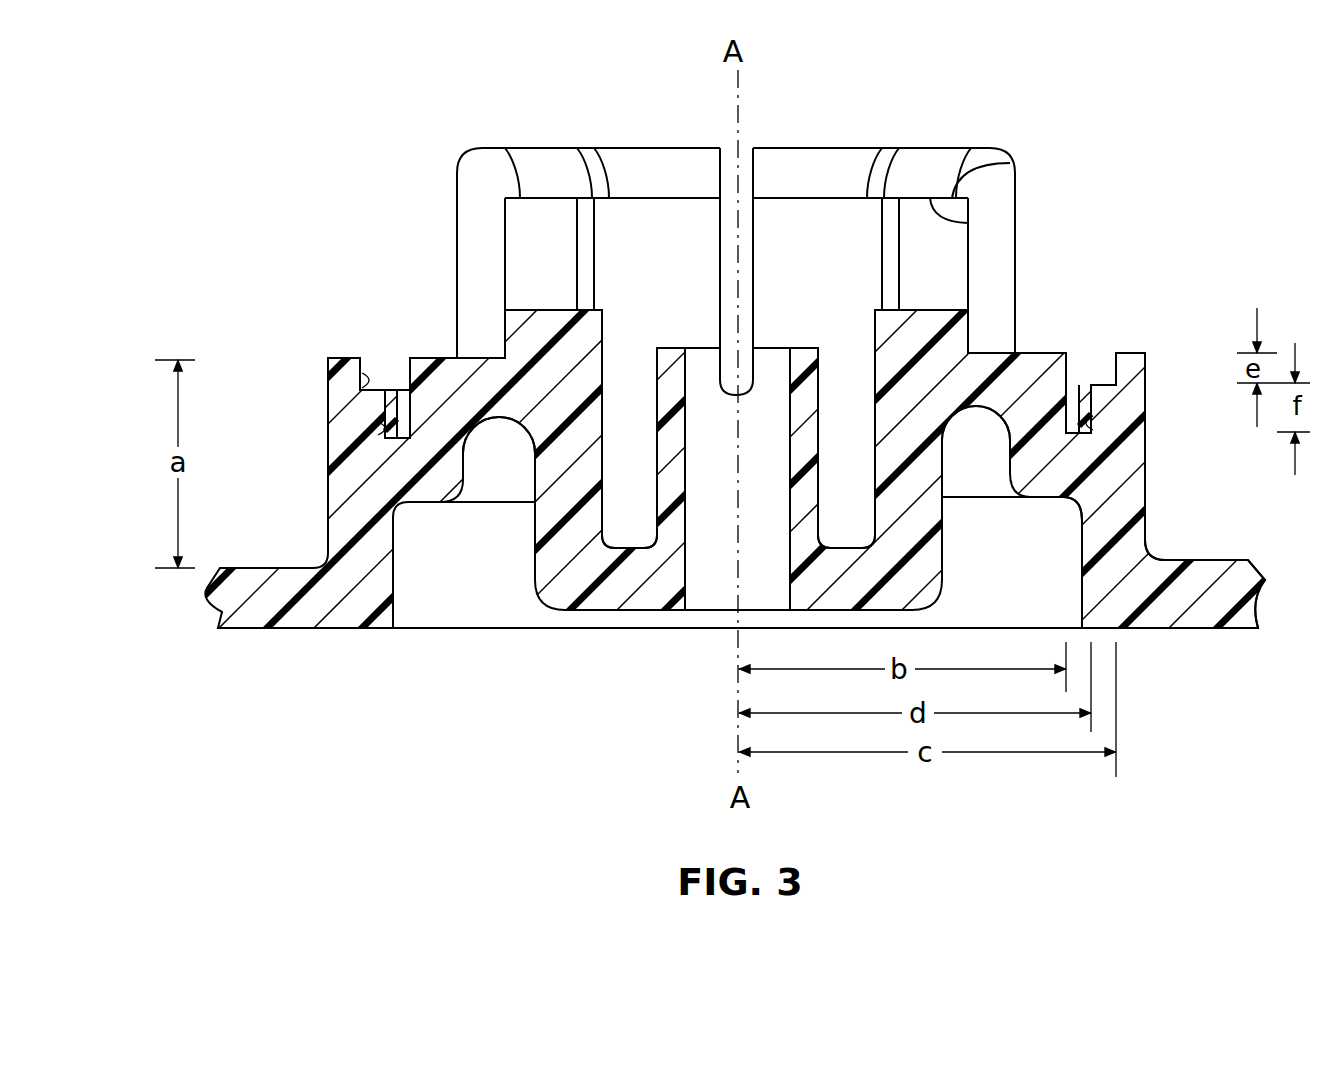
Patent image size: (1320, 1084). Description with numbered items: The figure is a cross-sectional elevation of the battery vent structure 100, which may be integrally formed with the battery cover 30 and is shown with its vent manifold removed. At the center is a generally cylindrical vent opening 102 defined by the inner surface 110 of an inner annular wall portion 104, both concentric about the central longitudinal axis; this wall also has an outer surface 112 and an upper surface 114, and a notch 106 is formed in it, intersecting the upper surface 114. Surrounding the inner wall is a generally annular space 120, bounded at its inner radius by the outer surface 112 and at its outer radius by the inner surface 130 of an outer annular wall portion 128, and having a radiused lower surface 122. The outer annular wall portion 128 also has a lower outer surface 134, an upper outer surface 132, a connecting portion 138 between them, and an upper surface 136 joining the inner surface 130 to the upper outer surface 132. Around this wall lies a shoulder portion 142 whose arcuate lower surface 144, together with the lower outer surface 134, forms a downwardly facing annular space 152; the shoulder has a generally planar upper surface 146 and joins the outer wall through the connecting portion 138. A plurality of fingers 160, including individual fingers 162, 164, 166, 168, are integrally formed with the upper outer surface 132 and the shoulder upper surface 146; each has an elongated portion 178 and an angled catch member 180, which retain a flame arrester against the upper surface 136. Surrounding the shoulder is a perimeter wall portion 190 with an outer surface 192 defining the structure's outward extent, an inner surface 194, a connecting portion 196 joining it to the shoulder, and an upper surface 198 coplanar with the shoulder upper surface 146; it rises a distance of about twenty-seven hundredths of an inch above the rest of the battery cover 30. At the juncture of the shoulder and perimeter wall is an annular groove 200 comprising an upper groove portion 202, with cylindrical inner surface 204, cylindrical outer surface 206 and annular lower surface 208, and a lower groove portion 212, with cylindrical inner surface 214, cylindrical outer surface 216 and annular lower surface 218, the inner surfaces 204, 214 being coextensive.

The battery cover 30 is at (1240, 560).
The battery vent structure 100 is at (283, 155).
The vent opening 102 is at (737, 479).
The inner annular wall portion 104 is at (803, 407).
The notch 106 is at (745, 355).
The inner surface 110 is at (690, 435).
The outer surface 112 is at (655, 402).
The upper surface 114 is at (803, 348).
The annular space 120 is at (623, 345).
The radiused lower surface 122 is at (850, 545).
The outer annular wall portion 128 is at (535, 555).
The inner surface 130 is at (602, 397).
The upper outer surface 132 is at (505, 320).
The lower outer surface 134 is at (530, 445).
The upper surface 136 is at (540, 310).
The connecting portion 138 is at (495, 480).
The shoulder portion 142 is at (1022, 393).
The arcuate lower surface 144 is at (1007, 475).
The upper surface 146 is at (427, 355).
The downwardly facing annular space 152 is at (966, 475).
The fingers 160 is at (734, 186).
The finger 162 is at (485, 138).
The finger 164 is at (665, 140).
The finger 166 is at (805, 140).
The finger 168 is at (988, 130).
The elongated portion 178 is at (990, 202).
The catch member 180 is at (968, 222).
The perimeter wall portion 190 is at (1125, 505).
The outer surface 192 is at (1145, 530).
The inner surface 194 is at (1082, 558).
The connecting portion 196 is at (1067, 470).
The upper surface 198 is at (335, 350).
The annular groove 200 is at (313, 364).
The upper groove portion 202 is at (375, 352).
The inner surface 204 is at (380, 372).
The outer surface 206 is at (362, 380).
The lower surface 208 is at (1095, 383).
The lower groove portion 212 is at (388, 400).
The inner surface 214 is at (1106, 398).
The outer surface 216 is at (378, 428).
The lower surface 218 is at (1092, 423).